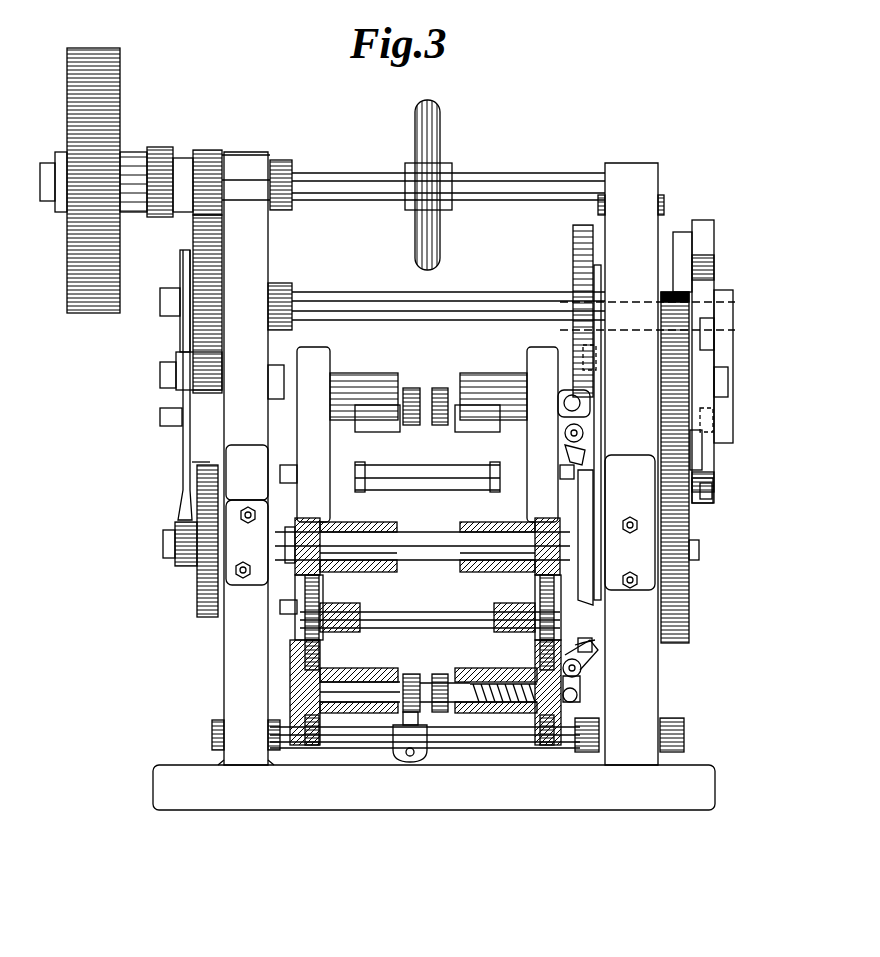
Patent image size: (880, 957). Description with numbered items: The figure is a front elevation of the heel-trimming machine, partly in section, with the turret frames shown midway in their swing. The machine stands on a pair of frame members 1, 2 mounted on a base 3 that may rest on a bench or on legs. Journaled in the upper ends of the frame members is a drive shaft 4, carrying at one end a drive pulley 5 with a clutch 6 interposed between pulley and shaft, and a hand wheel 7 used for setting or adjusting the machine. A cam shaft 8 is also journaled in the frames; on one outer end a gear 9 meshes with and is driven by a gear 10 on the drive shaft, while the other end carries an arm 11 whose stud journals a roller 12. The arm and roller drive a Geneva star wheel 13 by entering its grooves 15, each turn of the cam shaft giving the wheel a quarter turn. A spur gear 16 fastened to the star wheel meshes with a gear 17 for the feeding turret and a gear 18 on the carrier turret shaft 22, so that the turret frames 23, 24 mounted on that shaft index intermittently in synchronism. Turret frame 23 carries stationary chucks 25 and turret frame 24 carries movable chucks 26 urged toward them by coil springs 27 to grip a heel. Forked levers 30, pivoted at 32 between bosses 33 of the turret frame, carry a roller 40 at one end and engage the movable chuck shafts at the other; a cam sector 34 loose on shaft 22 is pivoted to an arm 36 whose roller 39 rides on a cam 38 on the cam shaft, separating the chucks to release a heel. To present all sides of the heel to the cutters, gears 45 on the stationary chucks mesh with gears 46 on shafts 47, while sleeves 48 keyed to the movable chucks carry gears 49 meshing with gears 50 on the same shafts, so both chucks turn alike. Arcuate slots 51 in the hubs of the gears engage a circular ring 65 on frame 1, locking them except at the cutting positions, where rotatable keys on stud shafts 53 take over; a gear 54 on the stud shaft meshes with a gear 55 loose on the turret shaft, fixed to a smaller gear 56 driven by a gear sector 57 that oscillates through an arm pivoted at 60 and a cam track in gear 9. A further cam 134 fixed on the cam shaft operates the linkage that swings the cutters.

The frame member 1 is at (255, 175).
The frame member 2 is at (622, 178).
The base 3 is at (483, 795).
The drive shaft 4 is at (463, 283).
The drive pulley 5 is at (103, 62).
The clutch 6 is at (163, 145).
The hand wheel 7 is at (418, 130).
The cam shaft 8 is at (500, 305).
The gear 9 is at (205, 248).
The gear 10 is at (210, 148).
The arm 11 is at (722, 340).
The roller 12 is at (708, 418).
The Geneva star wheel 13 is at (705, 255).
The grooves 15 is at (712, 492).
The spur gear 16 is at (682, 296).
The gear 17 is at (676, 496).
The gear 18 is at (675, 604).
The carrier turret shaft 22 is at (432, 540).
The turret frame 23 is at (340, 448).
The turret frame 24 is at (514, 442).
The stationary chucks 25 is at (412, 388).
The movable chucks 26 is at (440, 388).
The coil springs 27 is at (515, 705).
The forked levers 30 is at (592, 650).
The pivot 32 is at (582, 672).
The bosses 33 is at (600, 634).
The cam sector 34 is at (586, 495).
The arm 36 is at (600, 412).
The cam 38 is at (578, 250).
The roller 39 is at (583, 352).
The roller 40 is at (580, 645).
The gears 45 is at (312, 740).
The gears 46 is at (320, 590).
The shafts 47 is at (430, 456).
The sleeves 48 is at (560, 712).
The gears 49 is at (548, 740).
The gears 50 is at (532, 590).
The arcuate slots 51 is at (280, 608).
The stud shafts 53 is at (230, 482).
The gear 54 is at (205, 465).
The gear 55 is at (200, 600).
The gear 56 is at (178, 560).
The gear sector 57 is at (178, 505).
The pivot 60 is at (158, 416).
The circular ring 65 is at (297, 474).
The cam 134 is at (684, 232).